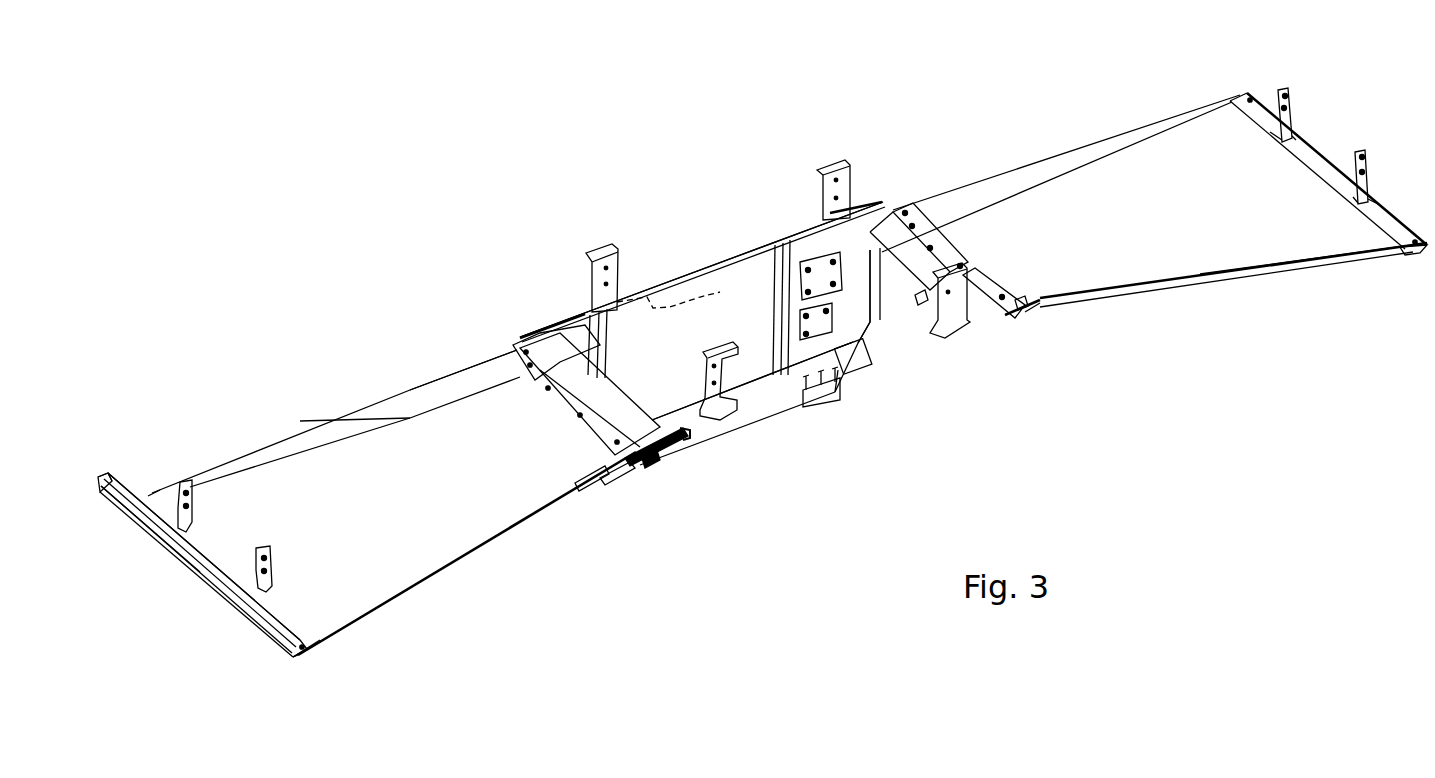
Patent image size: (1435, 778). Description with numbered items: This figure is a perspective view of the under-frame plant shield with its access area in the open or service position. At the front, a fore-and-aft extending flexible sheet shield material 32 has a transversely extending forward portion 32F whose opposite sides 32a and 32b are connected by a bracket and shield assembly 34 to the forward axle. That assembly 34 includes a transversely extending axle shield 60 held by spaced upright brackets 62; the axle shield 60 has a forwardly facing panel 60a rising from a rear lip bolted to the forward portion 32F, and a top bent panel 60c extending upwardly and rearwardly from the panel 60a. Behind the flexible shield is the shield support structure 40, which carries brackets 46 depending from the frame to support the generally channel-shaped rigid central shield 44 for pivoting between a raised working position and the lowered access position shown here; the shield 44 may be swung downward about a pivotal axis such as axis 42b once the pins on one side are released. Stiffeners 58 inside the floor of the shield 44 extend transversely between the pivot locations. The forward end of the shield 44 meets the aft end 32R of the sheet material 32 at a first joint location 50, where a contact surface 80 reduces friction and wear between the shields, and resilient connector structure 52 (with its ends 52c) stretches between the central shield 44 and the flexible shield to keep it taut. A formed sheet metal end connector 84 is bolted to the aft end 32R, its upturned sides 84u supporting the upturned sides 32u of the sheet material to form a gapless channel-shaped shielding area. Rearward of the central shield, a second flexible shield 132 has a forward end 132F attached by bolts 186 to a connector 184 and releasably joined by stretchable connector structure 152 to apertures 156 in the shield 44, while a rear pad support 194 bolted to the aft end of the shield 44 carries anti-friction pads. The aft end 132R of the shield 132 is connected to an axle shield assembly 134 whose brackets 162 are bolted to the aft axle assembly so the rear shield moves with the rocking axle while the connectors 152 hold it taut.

The flexible sheet shield material 32 is at (393, 512).
The side of the forward portion 32a is at (150, 493).
The side of the forward portion 32b is at (317, 642).
The forward portion 32F is at (303, 615).
The aft end of the shield material 32R is at (573, 423).
The upturned sides 32u is at (363, 417).
The bracket and shield assembly 34 is at (203, 593).
The shield support structure 40 is at (580, 287).
The pivotal axis 42b is at (692, 294).
The rigid central shield 44 is at (803, 432).
The brackets 46 is at (617, 263).
The first joint location 50 is at (650, 468).
The resilient or stretchable connector structure 52 is at (667, 447).
The hinge pin end 52c is at (687, 433).
The stiffeners or reinforcing members 58 is at (598, 343).
The axle shield 60 is at (247, 620).
The forwardly facing panel 60a is at (143, 537).
The top bent panel 60c is at (110, 477).
The upright brackets 62 is at (190, 502).
The contact surface 80 is at (625, 382).
The formed sheet metal end connector 84 is at (600, 433).
The upturned sides of the connector 84u is at (513, 367).
The second flexible shield 132 is at (1176, 217).
The forward end of the second flexible shield 132F is at (1035, 292).
The aft end of the second flexible shield 132R is at (1352, 220).
The axle shield assembly 134 is at (1397, 203).
The resilient or stretchable connector structure 152 is at (917, 297).
The apertures 156 is at (835, 262).
The brackets 162 is at (1358, 155).
The connector 184 is at (960, 247).
The bolts 186 is at (940, 237).
The rear pad support 194 is at (882, 335).